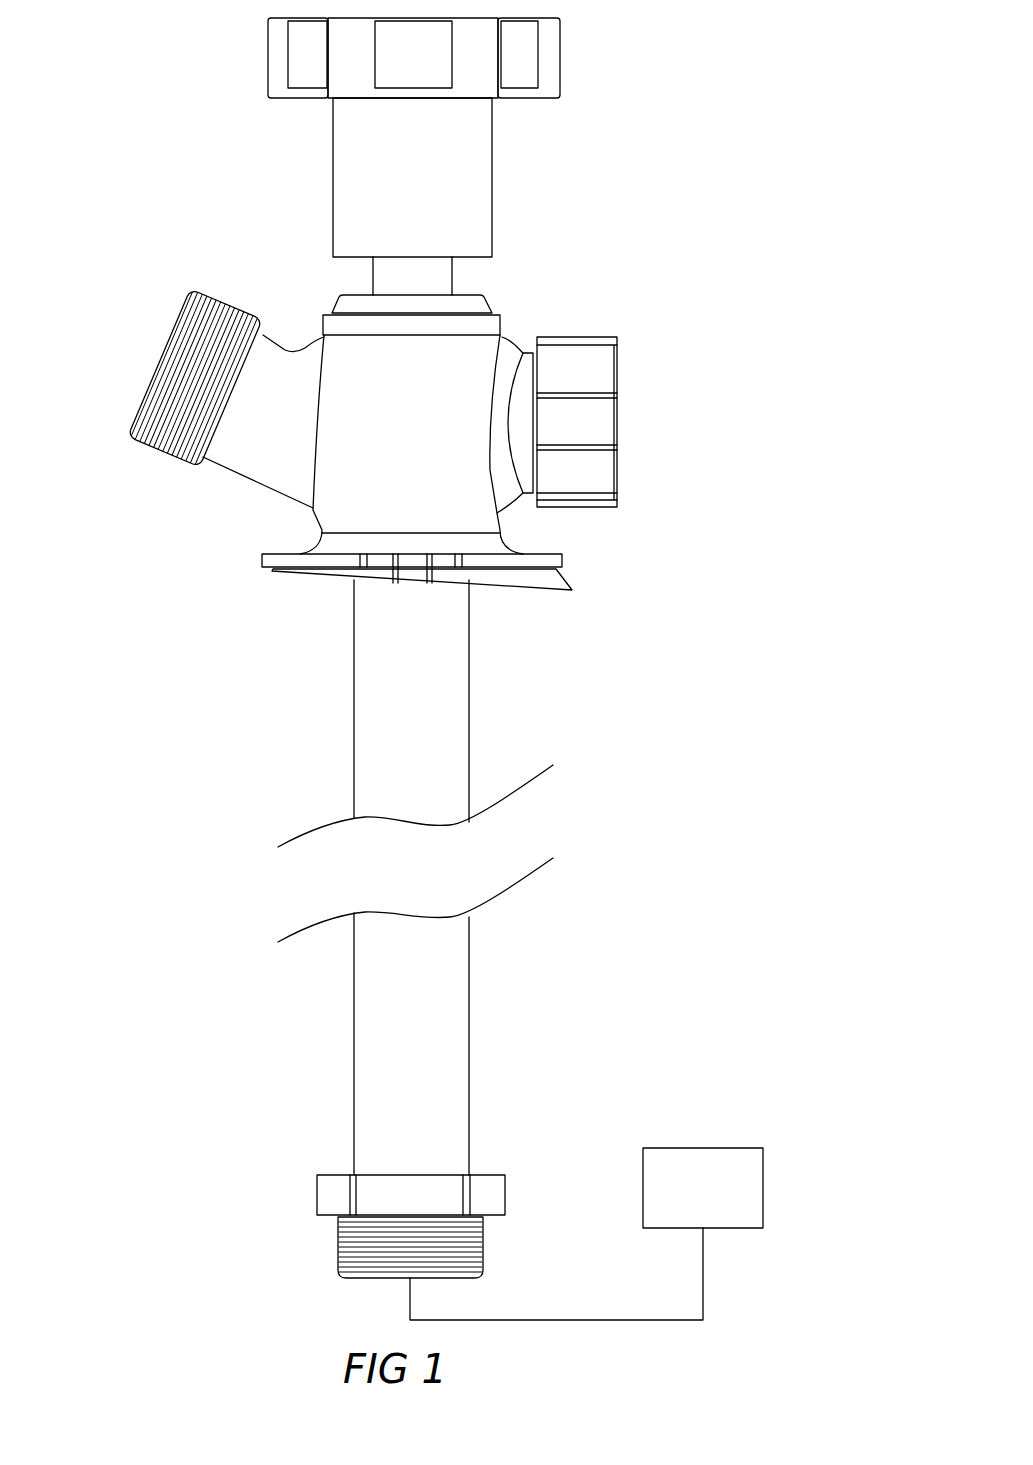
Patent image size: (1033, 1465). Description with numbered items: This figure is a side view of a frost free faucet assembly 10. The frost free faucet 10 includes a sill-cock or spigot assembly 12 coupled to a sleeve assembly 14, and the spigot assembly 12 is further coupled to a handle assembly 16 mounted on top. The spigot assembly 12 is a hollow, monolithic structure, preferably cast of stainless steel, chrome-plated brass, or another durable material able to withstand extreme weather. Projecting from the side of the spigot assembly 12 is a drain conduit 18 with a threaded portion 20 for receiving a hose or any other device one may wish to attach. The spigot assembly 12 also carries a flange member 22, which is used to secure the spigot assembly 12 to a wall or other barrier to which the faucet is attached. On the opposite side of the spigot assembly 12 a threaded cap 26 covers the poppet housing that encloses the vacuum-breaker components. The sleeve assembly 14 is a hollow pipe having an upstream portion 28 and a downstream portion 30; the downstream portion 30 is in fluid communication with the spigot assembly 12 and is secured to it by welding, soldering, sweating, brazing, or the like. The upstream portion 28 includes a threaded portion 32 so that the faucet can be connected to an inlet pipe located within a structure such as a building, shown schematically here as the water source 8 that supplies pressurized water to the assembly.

The water source 8 is at (753, 1182).
The frost free faucet assembly 10 is at (765, 128).
The spigot assembly 12 is at (153, 348).
The sleeve assembly 14 is at (477, 684).
The handle assembly 16 is at (497, 174).
The drain conduit 18 is at (247, 482).
The threaded portion 20 is at (145, 450).
The flange member 22 is at (263, 555).
The threaded cap 26 is at (605, 382).
The upstream portion 28 is at (448, 1133).
The downstream portion 30 is at (367, 625).
The threaded portion 32 is at (357, 1250).